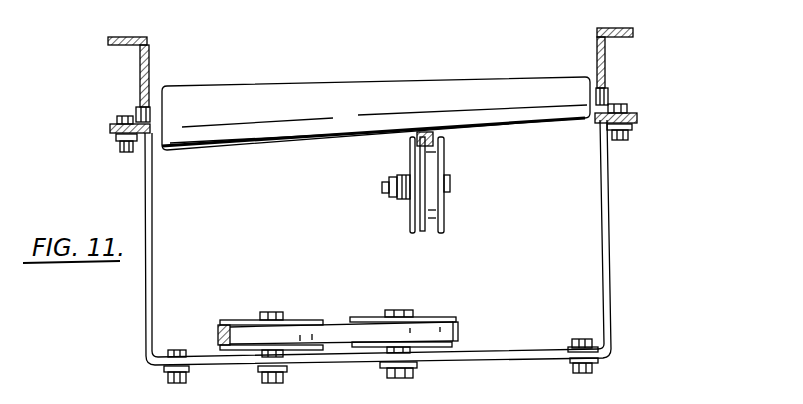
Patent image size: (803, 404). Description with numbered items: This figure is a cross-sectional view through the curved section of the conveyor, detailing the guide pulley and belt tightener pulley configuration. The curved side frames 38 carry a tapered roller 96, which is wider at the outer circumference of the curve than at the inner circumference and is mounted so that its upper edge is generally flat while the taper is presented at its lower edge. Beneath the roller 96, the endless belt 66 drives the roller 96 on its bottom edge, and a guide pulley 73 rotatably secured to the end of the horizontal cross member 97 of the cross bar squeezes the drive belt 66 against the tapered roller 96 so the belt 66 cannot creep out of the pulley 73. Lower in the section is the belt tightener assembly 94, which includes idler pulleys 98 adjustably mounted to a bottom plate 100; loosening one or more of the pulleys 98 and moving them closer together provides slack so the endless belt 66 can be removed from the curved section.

The side frame 38 is at (150, 42).
The endless belt 66 is at (421, 131).
The guide pulley 73 is at (446, 226).
The belt tightener assembly 94 is at (334, 318).
The tapered roller 96 is at (497, 88).
The horizontal cross member 97 is at (400, 205).
The idler pulley 98 is at (232, 318).
The bottom plate 100 is at (488, 364).